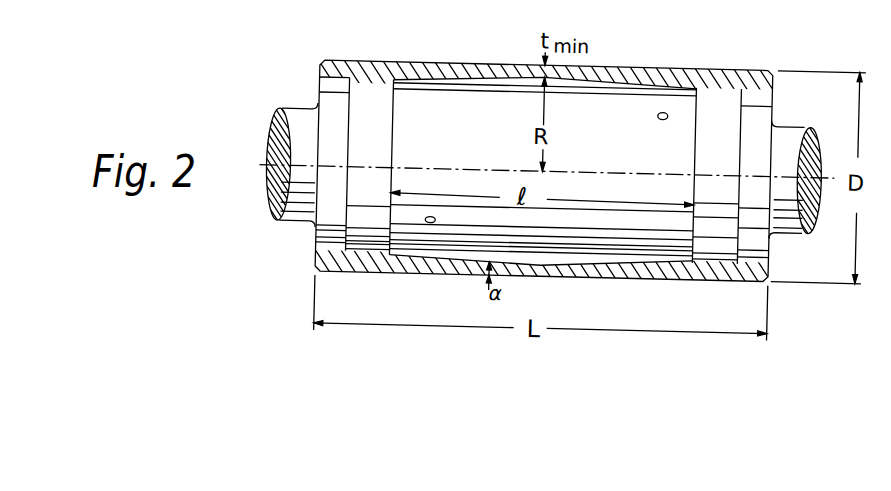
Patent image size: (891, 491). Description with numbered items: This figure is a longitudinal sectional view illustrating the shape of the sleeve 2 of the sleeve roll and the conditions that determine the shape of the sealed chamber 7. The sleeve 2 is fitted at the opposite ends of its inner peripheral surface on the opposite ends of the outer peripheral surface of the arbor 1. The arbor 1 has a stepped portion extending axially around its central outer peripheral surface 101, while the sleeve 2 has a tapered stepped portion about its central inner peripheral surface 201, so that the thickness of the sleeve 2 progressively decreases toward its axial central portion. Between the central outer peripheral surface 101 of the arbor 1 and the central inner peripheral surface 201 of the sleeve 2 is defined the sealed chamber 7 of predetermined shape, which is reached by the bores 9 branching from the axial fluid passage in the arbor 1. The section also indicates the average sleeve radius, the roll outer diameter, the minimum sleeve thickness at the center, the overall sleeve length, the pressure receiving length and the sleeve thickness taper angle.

The arbor 1 is at (631, 93).
The sleeve 2 is at (375, 60).
The sealed chamber 7 is at (582, 79).
The bores 9 is at (661, 113).
The central outer peripheral surface 101 is at (475, 81).
The central inner peripheral surface 201 is at (496, 72).